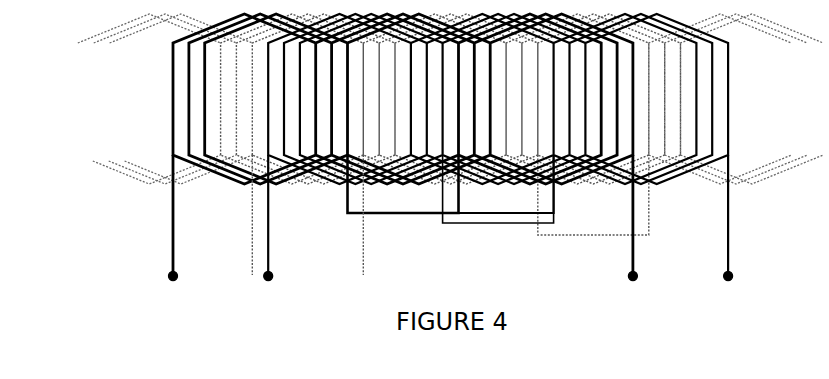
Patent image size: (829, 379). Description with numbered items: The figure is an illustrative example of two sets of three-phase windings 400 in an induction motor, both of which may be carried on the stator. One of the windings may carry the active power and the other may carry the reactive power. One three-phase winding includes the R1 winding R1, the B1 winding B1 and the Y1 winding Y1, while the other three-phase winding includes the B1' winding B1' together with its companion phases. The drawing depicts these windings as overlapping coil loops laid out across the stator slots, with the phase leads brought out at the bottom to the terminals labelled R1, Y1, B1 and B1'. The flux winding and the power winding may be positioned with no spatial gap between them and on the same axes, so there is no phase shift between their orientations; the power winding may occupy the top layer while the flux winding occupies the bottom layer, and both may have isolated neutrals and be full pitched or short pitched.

The two sets of three-phase windings 400 is at (97, 110).
The R1 winding R1 is at (393, 218).
The Y1 winding Y1 is at (498, 218).
The B1 winding B1 is at (352, 215).
The B1' winding B1' is at (239, 215).